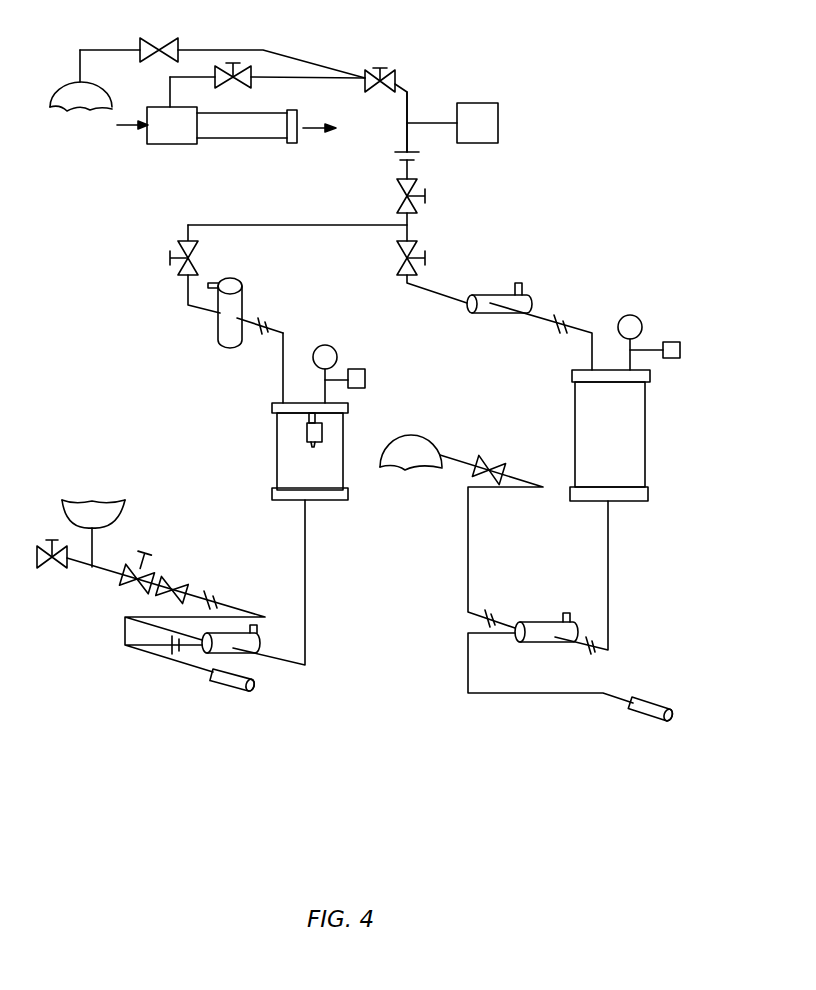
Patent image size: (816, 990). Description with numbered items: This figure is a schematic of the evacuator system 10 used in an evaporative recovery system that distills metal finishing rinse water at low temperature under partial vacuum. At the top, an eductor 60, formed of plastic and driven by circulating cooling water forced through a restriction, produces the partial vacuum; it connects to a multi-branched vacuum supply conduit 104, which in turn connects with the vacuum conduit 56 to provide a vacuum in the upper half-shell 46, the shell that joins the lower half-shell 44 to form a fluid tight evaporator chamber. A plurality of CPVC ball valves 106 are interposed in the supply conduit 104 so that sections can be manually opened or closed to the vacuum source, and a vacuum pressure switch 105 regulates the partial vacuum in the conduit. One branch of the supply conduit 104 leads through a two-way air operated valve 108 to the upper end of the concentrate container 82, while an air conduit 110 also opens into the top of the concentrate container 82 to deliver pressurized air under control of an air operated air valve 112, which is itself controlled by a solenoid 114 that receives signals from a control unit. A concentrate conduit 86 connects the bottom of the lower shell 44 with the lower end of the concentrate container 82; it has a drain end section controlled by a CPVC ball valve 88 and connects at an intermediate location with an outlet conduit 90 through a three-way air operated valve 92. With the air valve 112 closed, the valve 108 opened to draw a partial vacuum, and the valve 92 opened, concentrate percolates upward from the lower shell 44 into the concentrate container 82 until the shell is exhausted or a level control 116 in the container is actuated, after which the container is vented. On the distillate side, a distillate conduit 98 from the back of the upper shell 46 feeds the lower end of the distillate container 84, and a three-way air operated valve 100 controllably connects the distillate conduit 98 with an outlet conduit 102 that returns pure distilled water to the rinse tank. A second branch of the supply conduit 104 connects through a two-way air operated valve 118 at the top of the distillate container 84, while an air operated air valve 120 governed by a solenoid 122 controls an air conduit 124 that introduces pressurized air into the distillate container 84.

The evacuator system 10 is at (605, 174).
The lower half-shell 44 is at (110, 500).
The upper half-shell 46 is at (95, 110).
The vacuum conduit 56 is at (117, 50).
The eductor 60 is at (187, 142).
The concentrate container 82 is at (310, 451).
The distillate container 84 is at (623, 455).
The concentrate conduit 86 is at (306, 600).
The CPVC ball valve 88 is at (40, 546).
The outlet conduit 90 is at (225, 683).
The three-way air operated valve 92 is at (232, 650).
The distillate conduit 98 is at (608, 540).
The three-way air operated valve 100 is at (567, 582).
The outlet conduit 102 is at (653, 713).
The vacuum supply conduit 104 is at (410, 97).
The vacuum pressure switch 105 is at (487, 123).
The CPVC ball valves 106 is at (226, 68).
The two-way air operated valve 108 is at (223, 325).
The air conduit 110 is at (327, 388).
The air operated air valve 112 is at (324, 353).
The solenoid 114 is at (365, 380).
The level control 116 is at (307, 428).
The two-way air operated valve 118 is at (525, 311).
The air operated air valve 120 is at (632, 323).
The solenoid 122 is at (680, 352).
The air conduit 124 is at (636, 358).